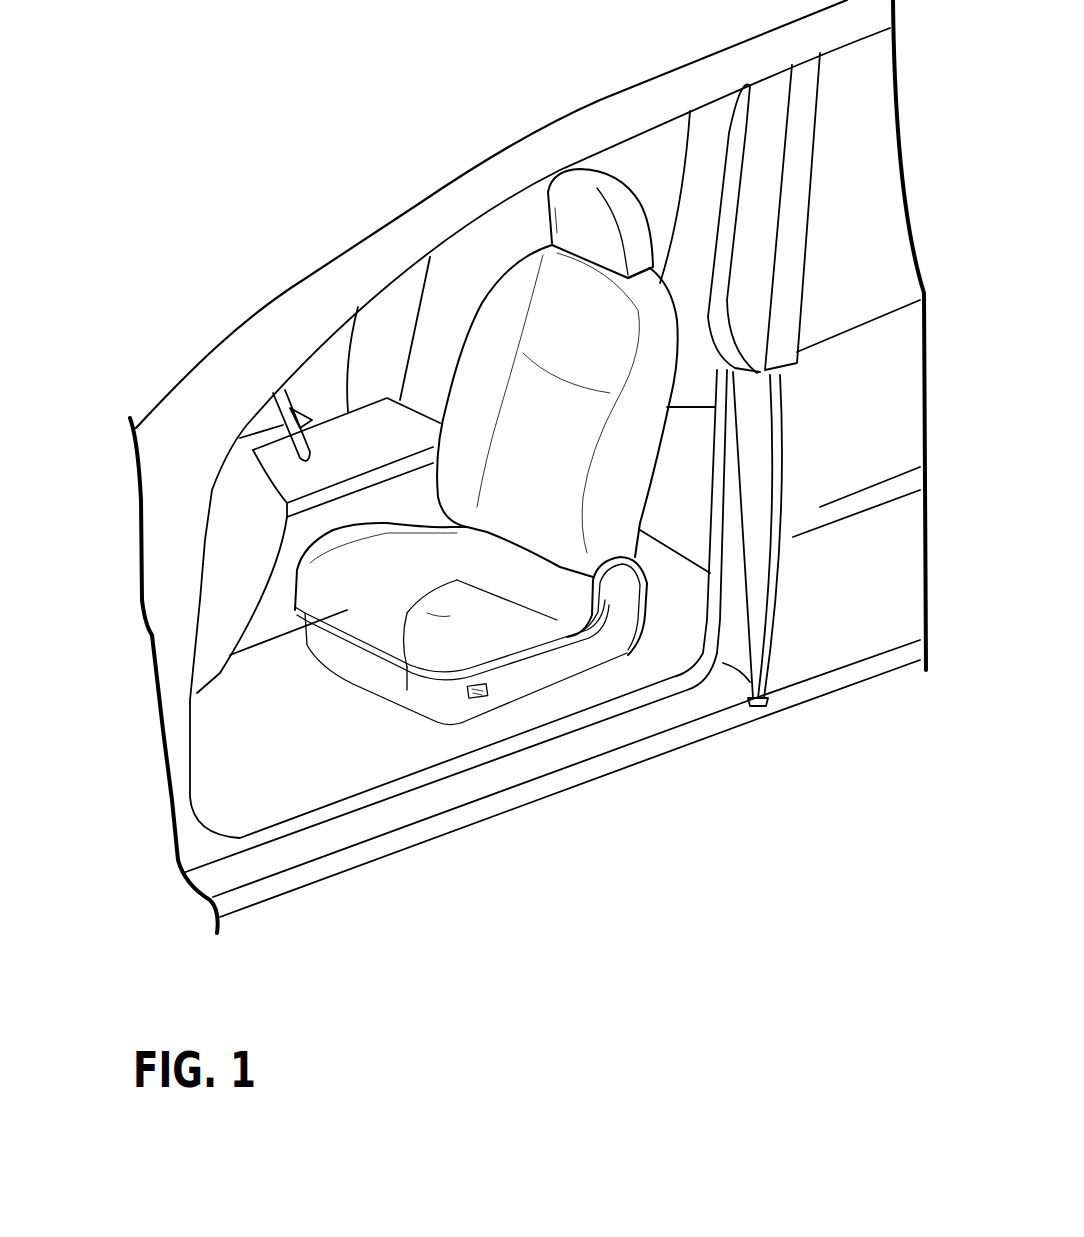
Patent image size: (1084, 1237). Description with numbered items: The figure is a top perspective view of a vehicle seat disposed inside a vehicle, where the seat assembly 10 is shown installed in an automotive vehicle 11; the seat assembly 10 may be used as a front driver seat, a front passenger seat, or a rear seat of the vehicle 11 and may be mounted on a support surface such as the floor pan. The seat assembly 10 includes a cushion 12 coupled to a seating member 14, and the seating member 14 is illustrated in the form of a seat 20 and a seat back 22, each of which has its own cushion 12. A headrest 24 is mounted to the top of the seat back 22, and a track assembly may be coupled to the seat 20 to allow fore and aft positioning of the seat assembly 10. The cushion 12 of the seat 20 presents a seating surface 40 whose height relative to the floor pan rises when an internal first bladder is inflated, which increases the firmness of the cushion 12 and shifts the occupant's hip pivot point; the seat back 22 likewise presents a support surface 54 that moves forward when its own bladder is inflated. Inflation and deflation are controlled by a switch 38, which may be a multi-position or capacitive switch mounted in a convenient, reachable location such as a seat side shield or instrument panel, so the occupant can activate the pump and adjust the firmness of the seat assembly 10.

The seat assembly 10 is at (372, 718).
The automotive vehicle 11 is at (364, 234).
The cushion 12 is at (557, 620).
The seating member 14 is at (455, 528).
The seat 20 is at (347, 610).
The seat back 22 is at (633, 433).
The headrest 24 is at (640, 200).
The switch 38 is at (477, 700).
The seating surface 40 is at (387, 578).
The support surface 54 is at (548, 420).